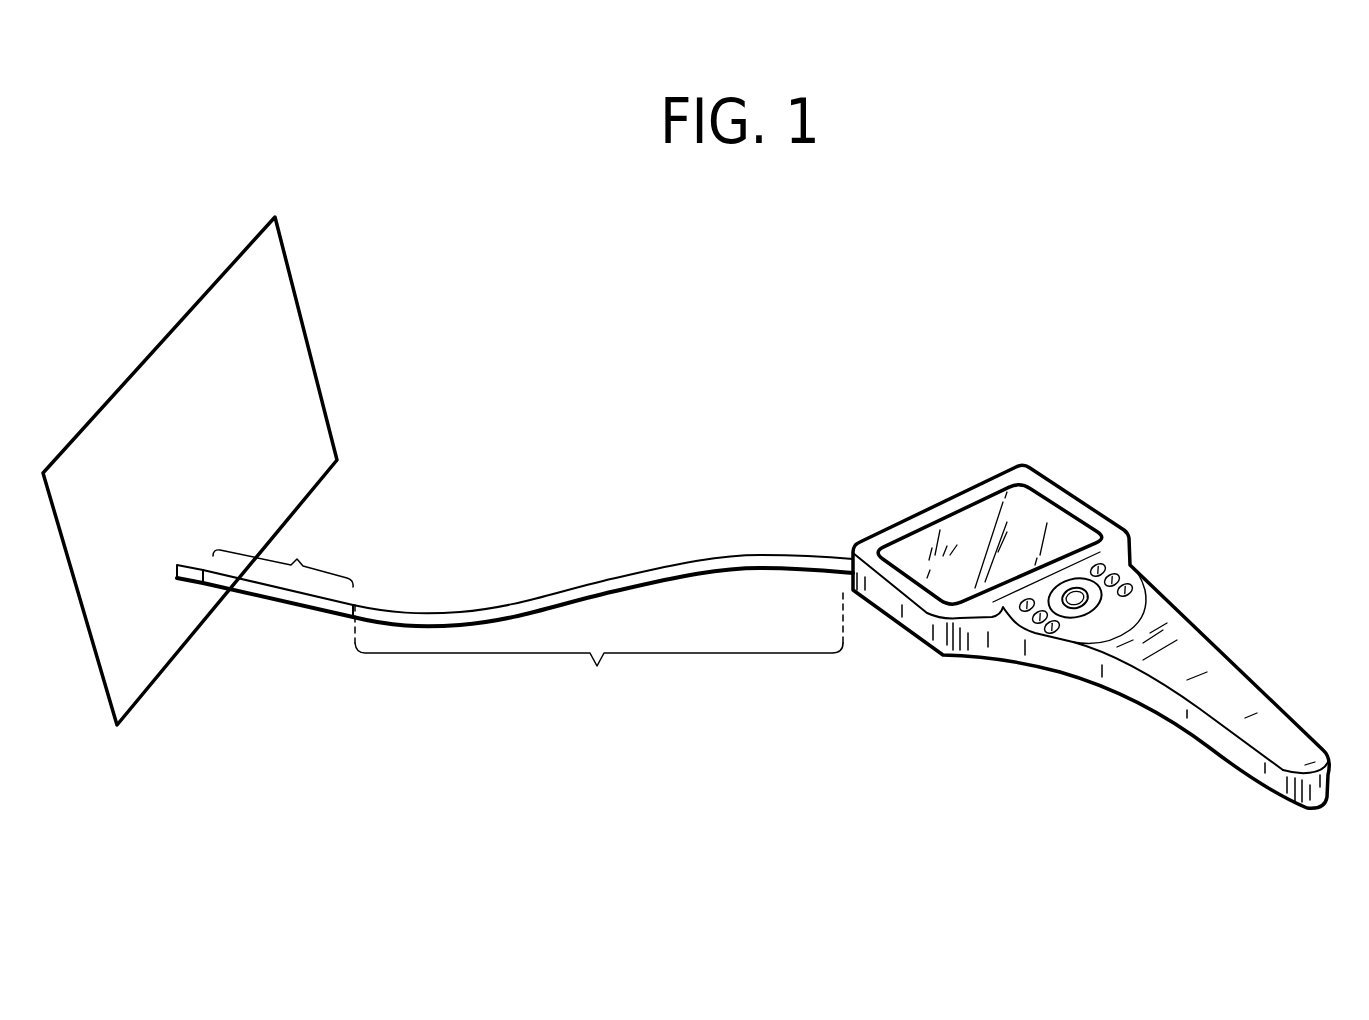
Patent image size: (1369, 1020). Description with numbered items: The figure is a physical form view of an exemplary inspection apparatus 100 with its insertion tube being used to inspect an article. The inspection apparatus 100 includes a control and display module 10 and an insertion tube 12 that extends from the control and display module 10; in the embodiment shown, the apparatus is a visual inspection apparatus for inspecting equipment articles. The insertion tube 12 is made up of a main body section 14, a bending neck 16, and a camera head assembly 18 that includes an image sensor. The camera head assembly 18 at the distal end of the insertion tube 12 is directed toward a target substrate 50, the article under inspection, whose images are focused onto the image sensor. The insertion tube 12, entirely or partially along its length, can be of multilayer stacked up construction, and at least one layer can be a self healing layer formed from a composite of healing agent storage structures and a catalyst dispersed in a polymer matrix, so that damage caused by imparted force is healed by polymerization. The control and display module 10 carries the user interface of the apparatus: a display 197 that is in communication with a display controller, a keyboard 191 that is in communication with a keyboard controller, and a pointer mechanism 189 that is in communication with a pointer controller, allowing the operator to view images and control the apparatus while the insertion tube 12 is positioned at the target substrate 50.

The inspection apparatus 100 is at (1068, 407).
The control and display module 10 is at (1237, 638).
The insertion tube 12 is at (598, 512).
The main body section 14 is at (599, 649).
The bending neck 16 is at (283, 553).
The camera head assembly 18 is at (175, 583).
The target substrate 50 is at (256, 463).
The display 197 is at (1042, 515).
The keyboard 191 is at (1138, 535).
The pointer mechanism 189 is at (1080, 605).